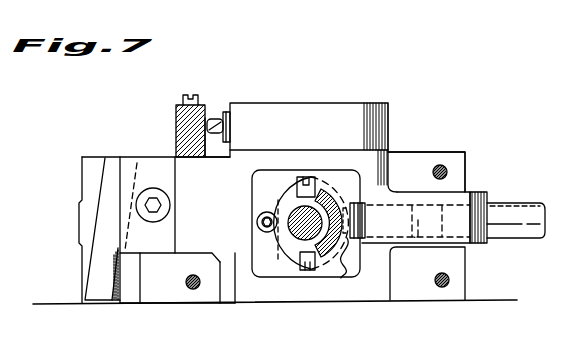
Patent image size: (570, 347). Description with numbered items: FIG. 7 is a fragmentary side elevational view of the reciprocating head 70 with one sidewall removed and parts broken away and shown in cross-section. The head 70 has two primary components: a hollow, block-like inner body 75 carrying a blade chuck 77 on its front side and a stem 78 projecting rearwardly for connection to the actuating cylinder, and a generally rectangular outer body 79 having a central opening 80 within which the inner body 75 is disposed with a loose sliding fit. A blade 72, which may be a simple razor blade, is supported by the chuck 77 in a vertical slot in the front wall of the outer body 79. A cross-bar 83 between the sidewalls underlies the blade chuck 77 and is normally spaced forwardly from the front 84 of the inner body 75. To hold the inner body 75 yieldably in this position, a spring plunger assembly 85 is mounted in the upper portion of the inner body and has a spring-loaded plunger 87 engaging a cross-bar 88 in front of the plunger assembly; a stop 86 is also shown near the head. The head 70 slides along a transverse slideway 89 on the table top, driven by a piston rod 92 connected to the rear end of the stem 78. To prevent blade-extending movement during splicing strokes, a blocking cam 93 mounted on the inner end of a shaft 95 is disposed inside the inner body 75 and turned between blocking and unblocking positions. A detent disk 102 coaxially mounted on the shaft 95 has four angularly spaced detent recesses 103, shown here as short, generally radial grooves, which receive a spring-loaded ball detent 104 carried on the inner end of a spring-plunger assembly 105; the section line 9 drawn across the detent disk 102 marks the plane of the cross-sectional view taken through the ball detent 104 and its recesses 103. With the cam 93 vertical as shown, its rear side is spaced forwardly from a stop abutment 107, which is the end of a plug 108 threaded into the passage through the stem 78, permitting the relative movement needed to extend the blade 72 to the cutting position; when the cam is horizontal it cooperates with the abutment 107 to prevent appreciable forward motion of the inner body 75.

The head 70 is at (148, 143).
The blade 72 is at (92, 257).
The inner body 75 is at (373, 157).
The blade chuck 77 is at (158, 247).
The stem 78 is at (483, 243).
The outer body 79 is at (449, 153).
The central opening 80 is at (222, 293).
The cross-bar 83 is at (155, 297).
The front of the inner body 84 is at (226, 285).
The spring plunger assembly 85 is at (220, 111).
The stop 86 is at (561, 134).
The spring-loaded plunger 87 is at (223, 128).
The cross-bar 88 is at (182, 120).
The slideway 89 is at (430, 290).
The piston rod 92 is at (505, 203).
The blocking cam 93 is at (256, 212).
The shaft 95 is at (318, 213).
The section line 9 is at (268, 187).
The detent disk 102 is at (292, 264).
The detent recesses 103 is at (298, 178).
The ball detent 104 is at (259, 223).
The spring-plunger assembly 105 is at (266, 190).
The stop abutment 107 is at (341, 276).
The plug 108 is at (411, 249).